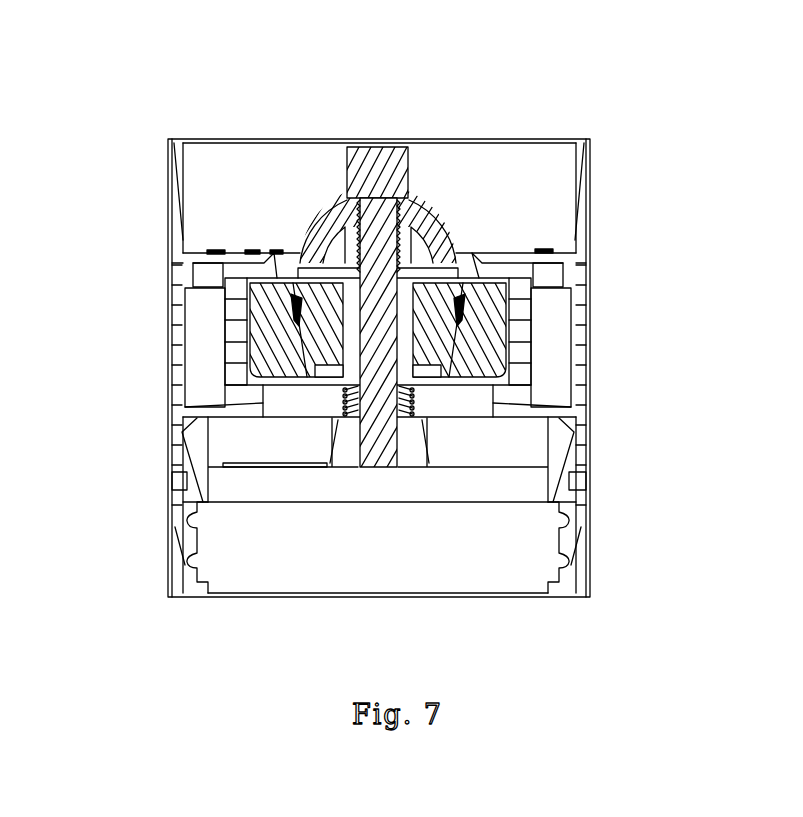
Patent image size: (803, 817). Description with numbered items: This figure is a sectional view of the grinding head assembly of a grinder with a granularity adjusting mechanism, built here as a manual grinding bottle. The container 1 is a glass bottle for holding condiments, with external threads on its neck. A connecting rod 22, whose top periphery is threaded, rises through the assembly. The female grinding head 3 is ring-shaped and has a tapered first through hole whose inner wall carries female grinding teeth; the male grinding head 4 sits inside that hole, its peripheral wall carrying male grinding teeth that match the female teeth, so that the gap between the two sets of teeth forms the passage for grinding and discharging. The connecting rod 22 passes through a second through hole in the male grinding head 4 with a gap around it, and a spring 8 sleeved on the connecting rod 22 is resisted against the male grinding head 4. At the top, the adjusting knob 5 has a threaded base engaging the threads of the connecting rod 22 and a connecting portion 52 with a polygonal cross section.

The container 1 is at (170, 371).
The female grinding head 3 is at (263, 355).
The male grinding head 4 is at (433, 307).
The adjusting knob 5 is at (419, 200).
The spring 8 is at (417, 398).
The connecting rod 22 is at (372, 425).
The connecting portion 52 is at (360, 147).